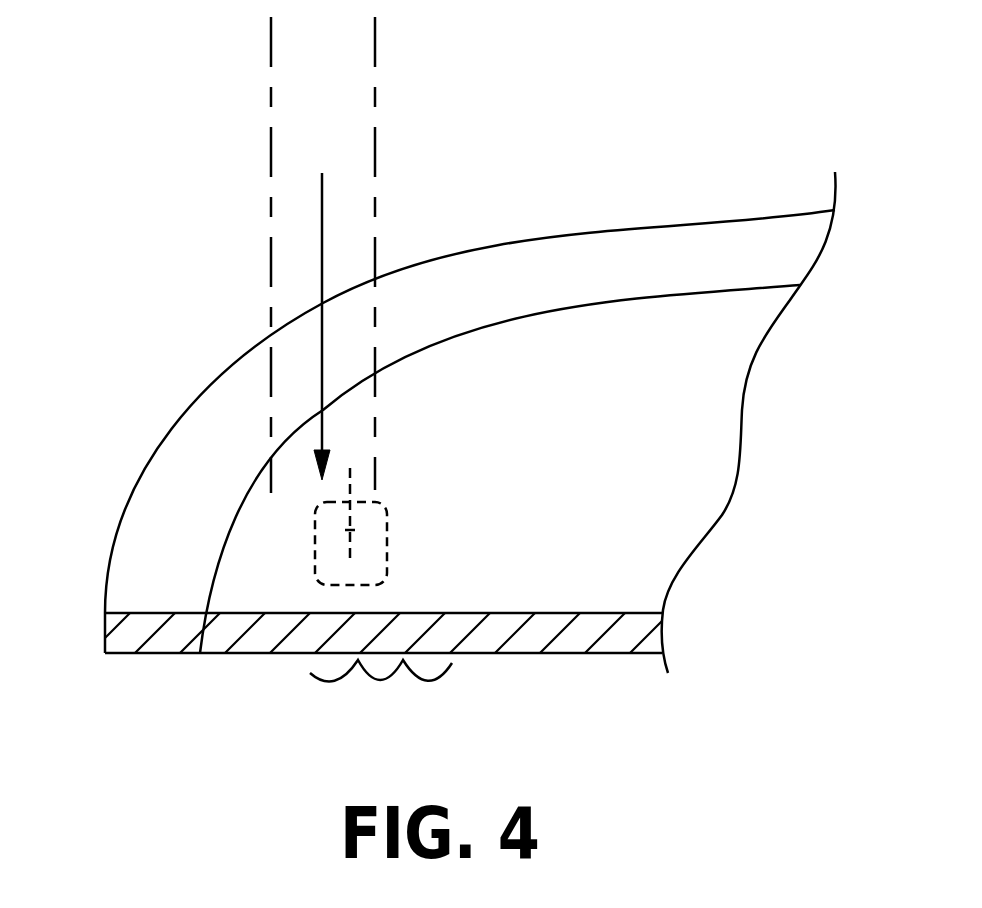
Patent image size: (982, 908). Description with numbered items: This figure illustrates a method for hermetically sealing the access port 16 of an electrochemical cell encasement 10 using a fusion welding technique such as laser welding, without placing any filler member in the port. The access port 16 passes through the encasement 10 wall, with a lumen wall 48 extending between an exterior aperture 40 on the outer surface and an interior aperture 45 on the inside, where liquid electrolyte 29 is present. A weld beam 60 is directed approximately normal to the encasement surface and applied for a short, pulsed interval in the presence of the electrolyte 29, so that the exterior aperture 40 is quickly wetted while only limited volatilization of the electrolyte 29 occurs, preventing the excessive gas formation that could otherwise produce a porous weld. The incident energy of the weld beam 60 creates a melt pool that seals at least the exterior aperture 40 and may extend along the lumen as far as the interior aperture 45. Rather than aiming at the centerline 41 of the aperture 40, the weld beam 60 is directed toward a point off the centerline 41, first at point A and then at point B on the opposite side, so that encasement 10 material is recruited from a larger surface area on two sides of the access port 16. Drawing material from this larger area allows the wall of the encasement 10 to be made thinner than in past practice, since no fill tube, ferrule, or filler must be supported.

The encasement 10 is at (635, 185).
The access port 16 is at (319, 518).
The liquid electrolyte 29 is at (408, 675).
The exterior aperture 40 is at (358, 512).
The centerline 41 is at (350, 482).
The interior aperture 45 is at (365, 585).
The lumen wall 48 is at (372, 568).
The weld beam 60 is at (375, 163).
The first point A is at (333, 518).
The second point B is at (360, 517).